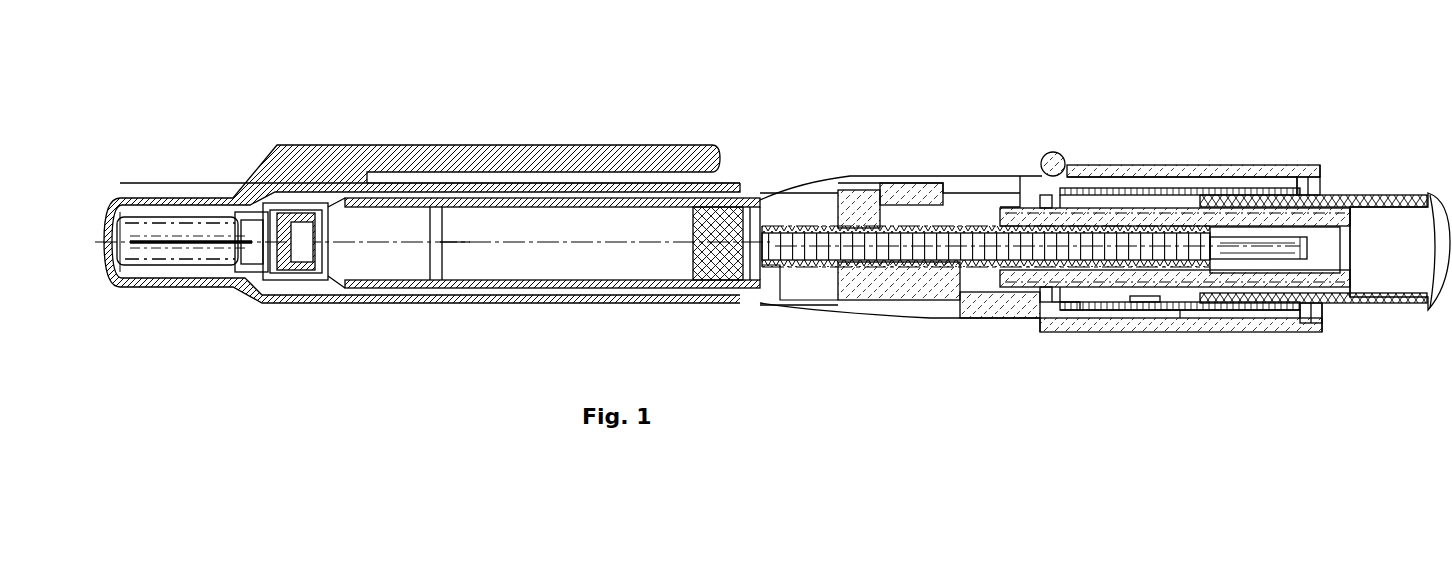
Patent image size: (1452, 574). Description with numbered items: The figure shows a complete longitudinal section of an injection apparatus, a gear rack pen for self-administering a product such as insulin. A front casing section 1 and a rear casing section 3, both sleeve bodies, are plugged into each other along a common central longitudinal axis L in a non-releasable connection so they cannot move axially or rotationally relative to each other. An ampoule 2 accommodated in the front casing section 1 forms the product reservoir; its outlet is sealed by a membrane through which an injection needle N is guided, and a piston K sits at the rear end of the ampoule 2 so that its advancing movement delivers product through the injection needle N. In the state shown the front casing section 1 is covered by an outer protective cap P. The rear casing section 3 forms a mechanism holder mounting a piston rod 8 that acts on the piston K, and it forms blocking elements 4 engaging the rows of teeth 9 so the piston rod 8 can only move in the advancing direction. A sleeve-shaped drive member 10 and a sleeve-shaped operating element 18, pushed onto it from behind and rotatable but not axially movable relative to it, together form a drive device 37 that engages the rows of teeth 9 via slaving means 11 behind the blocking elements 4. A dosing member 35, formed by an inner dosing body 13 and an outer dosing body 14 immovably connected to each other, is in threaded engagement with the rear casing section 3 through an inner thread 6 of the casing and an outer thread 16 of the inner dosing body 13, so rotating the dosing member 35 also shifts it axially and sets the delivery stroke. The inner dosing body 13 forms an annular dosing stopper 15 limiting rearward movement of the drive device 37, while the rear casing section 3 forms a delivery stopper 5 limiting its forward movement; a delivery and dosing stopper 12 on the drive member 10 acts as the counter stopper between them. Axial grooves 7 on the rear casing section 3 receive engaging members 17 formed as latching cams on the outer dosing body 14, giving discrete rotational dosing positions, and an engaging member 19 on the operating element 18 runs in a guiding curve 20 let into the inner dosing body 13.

The injection needle N is at (162, 235).
The outer protective cap P is at (205, 197).
The central longitudinal axis L is at (462, 240).
The ampoule 2 is at (510, 205).
The piston K is at (728, 200).
The front casing section 1 is at (808, 190).
The rear casing section 3 is at (975, 180).
The blocking elements 4 is at (783, 280).
The piston rod 8 is at (871, 200).
The rows of teeth 9 is at (898, 200).
The delivery and dosing stopper 12 is at (1053, 195).
The drive member 10 is at (1095, 200).
The inner thread 6 is at (1180, 188).
The outer thread 16 is at (1150, 187).
The inner dosing body 13 is at (1227, 190).
The outer dosing body 14 is at (1280, 165).
The dosing member 35 is at (1255, 140).
The operating element 18 is at (1370, 195).
The engaging member 19 is at (1408, 195).
The slaving means 11 is at (935, 292).
The delivery stopper 5 is at (970, 295).
The dosing stopper 15 is at (1058, 303).
The guiding curve 20 is at (1137, 303).
The axial grooves 7 is at (1160, 317).
The engaging members 17 is at (1188, 320).
The drive device 37 is at (1340, 315).